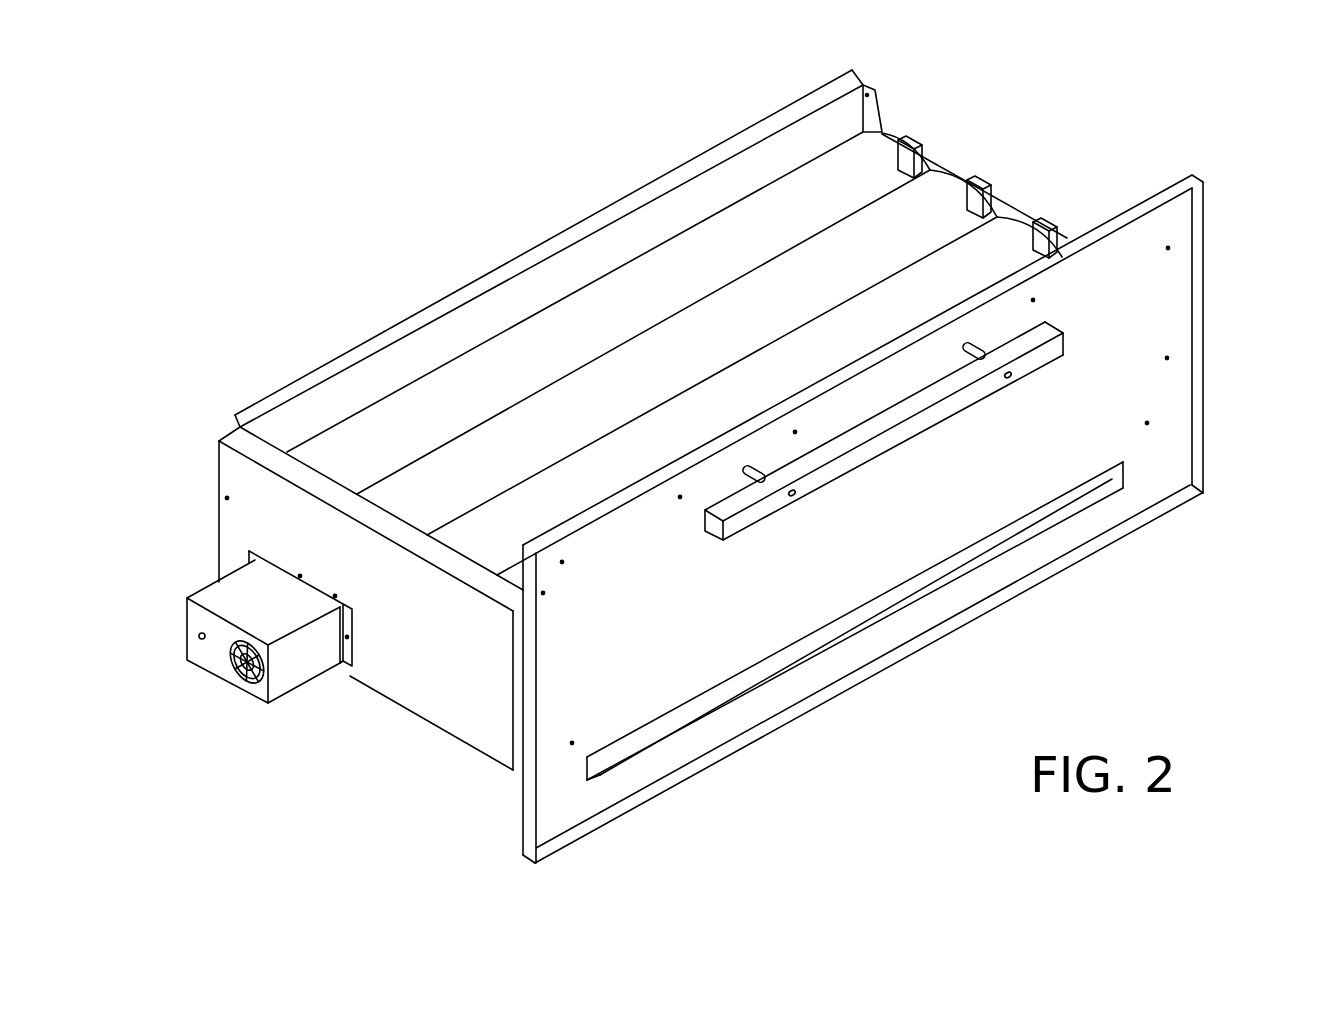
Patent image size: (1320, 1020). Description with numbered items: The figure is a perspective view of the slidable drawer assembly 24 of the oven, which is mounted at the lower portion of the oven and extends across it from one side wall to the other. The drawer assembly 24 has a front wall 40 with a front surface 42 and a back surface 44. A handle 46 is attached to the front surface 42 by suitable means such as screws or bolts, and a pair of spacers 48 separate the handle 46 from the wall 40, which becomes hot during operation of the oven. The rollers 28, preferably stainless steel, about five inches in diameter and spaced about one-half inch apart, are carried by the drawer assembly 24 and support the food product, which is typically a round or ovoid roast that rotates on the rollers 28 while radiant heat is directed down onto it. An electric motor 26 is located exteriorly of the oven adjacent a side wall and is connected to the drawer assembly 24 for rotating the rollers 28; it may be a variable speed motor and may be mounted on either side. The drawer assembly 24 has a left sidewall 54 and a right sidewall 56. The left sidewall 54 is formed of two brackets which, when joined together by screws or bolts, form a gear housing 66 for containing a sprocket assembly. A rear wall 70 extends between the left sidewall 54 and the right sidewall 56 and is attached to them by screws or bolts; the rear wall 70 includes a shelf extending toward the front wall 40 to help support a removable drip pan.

The drawer assembly 24 is at (486, 236).
The electric motor 26 is at (222, 593).
The rollers 28 is at (557, 356).
The front wall 40 is at (1210, 255).
The front surface 42 is at (1158, 383).
The back surface 44 is at (1147, 190).
The handle 46 is at (918, 430).
The spacers 48 is at (964, 358).
The left sidewall 54 is at (423, 688).
The right sidewall 56 is at (1000, 192).
The gear housing 66 is at (210, 465).
The rear wall 70 is at (633, 228).